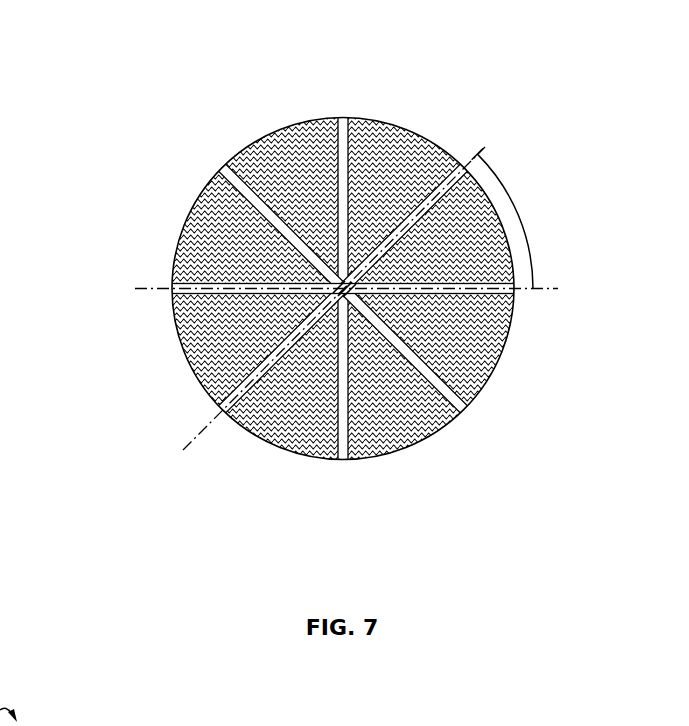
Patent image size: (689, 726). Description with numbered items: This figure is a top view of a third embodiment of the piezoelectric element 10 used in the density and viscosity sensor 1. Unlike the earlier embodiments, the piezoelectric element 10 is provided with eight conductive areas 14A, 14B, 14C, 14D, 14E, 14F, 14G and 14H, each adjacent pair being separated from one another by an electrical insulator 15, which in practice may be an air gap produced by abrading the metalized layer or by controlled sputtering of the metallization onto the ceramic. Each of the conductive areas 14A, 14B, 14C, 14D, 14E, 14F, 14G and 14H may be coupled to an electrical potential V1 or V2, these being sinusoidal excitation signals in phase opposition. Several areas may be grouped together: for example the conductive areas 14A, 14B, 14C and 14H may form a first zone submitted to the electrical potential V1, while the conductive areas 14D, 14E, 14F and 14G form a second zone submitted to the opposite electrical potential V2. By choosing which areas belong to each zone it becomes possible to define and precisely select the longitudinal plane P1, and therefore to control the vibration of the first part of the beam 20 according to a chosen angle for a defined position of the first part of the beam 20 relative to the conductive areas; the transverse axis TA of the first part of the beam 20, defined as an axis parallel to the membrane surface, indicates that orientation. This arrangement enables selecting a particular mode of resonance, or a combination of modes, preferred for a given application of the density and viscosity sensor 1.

The density and viscosity sensor 1 is at (142, 90).
The piezoelectric element 10 is at (200, 175).
The conductive area 14A is at (231, 244).
The conductive area 14B is at (290, 201).
The conductive area 14C is at (367, 201).
The conductive area 14D is at (410, 264).
The conductive area 14E is at (410, 324).
The conductive area 14F is at (365, 384).
The conductive area 14G is at (286, 384).
The conductive area 14H is at (245, 322).
The electrical insulator 15 is at (160, 288).
The first part of the beam 20 is at (172, 268).
The transverse axis TA is at (140, 288).
The longitudinal plane P1 is at (204, 430).
The electrical potential V1 is at (290, 155).
The electrical potential V2 is at (479, 235).